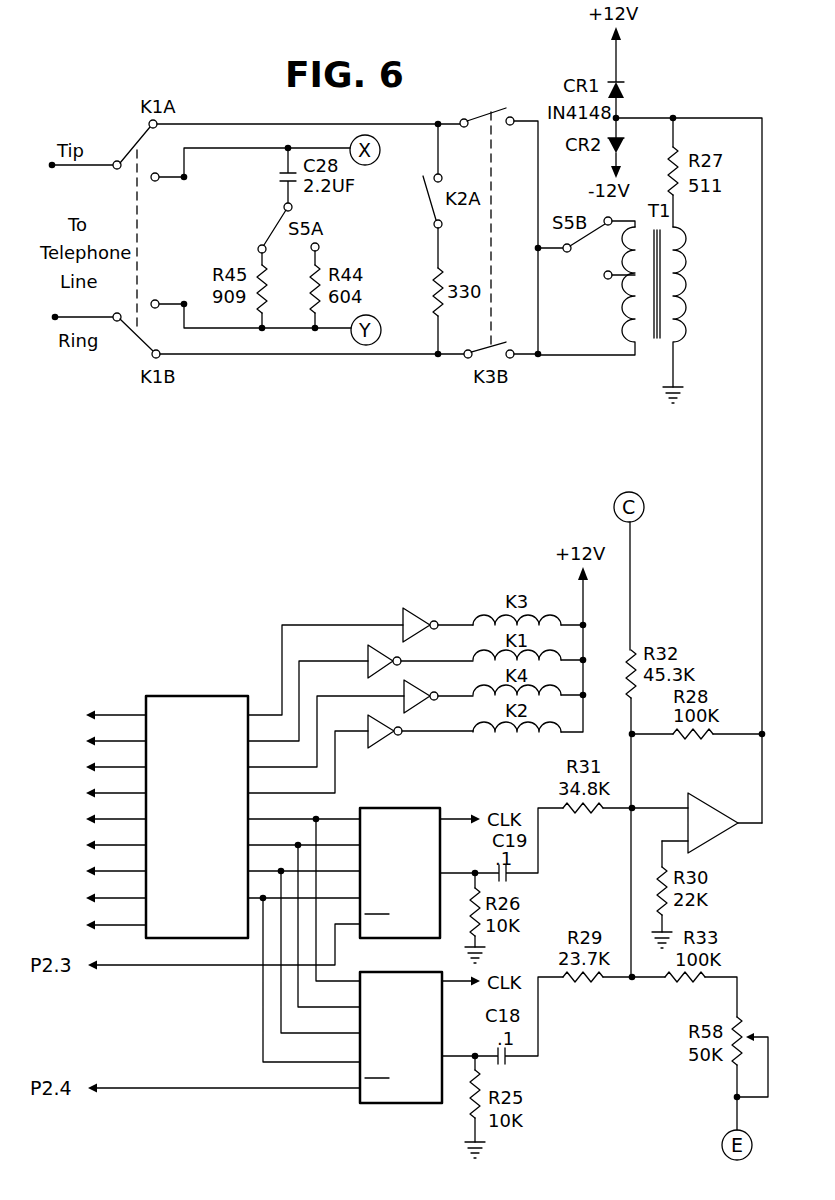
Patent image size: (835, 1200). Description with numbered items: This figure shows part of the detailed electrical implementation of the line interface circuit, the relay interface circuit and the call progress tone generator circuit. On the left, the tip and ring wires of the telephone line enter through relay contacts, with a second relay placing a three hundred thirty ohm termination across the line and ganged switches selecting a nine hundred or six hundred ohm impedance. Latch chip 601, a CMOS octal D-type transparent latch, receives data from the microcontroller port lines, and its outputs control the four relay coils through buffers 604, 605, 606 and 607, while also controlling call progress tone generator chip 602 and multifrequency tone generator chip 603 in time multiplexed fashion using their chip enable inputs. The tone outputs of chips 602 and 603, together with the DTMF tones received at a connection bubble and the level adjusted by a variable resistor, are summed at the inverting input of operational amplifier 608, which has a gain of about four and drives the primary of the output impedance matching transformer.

The latch chip 601 is at (212, 695).
The call progress tone generator chip 602 is at (399, 806).
The multifrequency tone generator chip 603 is at (360, 1101).
The buffer 604 is at (426, 620).
The buffer 605 is at (366, 652).
The buffer 606 is at (414, 689).
The buffer 607 is at (371, 719).
The operational amplifier 608 is at (715, 802).